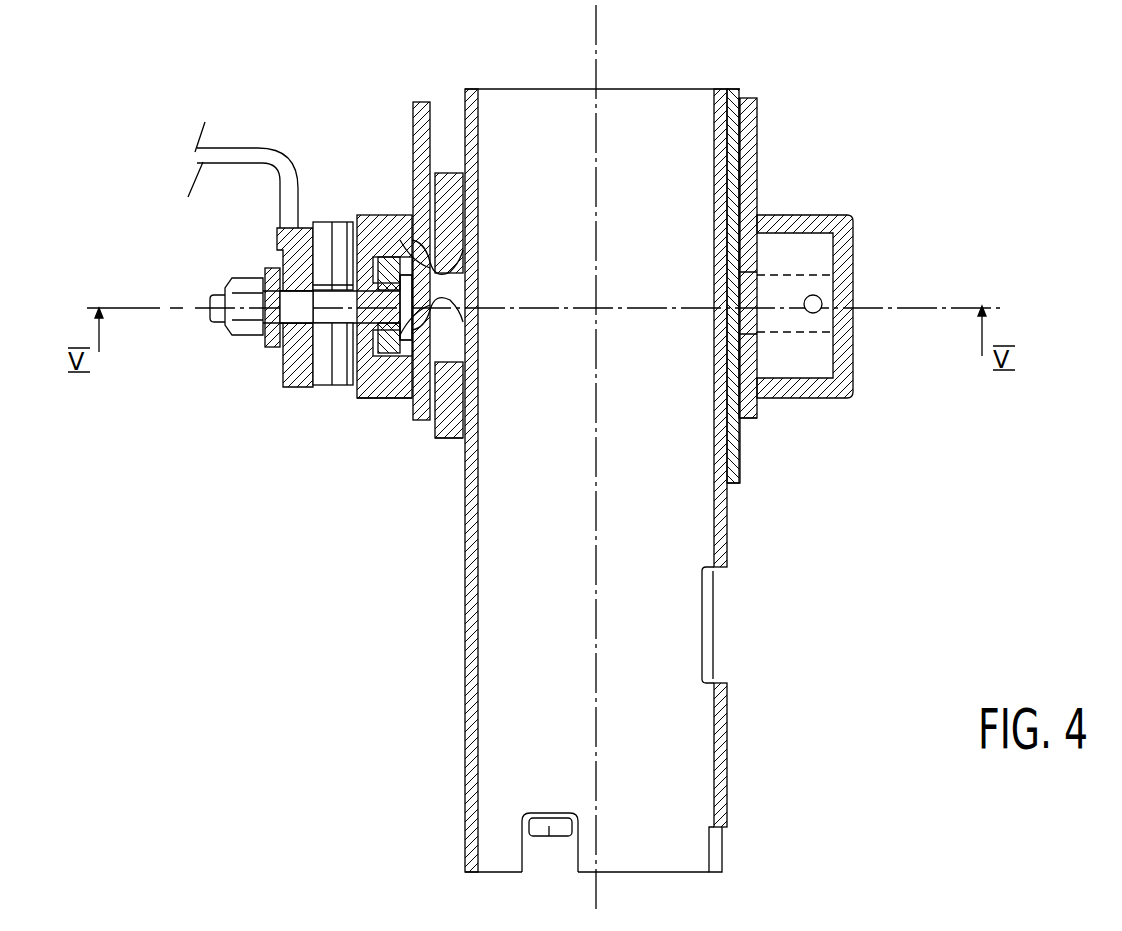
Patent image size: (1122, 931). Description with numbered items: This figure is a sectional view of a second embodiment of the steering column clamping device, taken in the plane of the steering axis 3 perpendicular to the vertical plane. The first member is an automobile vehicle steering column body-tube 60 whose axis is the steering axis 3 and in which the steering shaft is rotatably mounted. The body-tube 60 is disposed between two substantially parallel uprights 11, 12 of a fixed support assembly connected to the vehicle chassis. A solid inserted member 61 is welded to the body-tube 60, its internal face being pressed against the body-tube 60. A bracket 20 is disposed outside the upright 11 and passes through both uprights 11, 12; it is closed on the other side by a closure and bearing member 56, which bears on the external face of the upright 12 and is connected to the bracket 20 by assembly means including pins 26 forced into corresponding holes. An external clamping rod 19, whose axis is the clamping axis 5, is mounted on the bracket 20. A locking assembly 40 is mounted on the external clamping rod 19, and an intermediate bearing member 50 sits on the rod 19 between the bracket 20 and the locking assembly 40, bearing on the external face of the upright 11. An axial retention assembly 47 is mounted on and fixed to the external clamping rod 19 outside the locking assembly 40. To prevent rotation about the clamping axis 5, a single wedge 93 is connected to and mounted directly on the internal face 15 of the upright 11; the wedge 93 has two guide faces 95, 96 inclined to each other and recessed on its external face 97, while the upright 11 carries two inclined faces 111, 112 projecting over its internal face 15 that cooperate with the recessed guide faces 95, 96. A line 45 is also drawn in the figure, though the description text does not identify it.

The steering axis 3 is at (596, 52).
The clamping axis 5 is at (181, 300).
The upright 11 is at (420, 400).
The upright 12 is at (750, 405).
The internal face 15 is at (430, 115).
The external clamping rod 19 is at (288, 318).
The bracket 20 is at (367, 370).
The pin 26 is at (815, 306).
The locking assembly 40 is at (340, 196).
The hydraulic line 45 is at (232, 152).
The axial retention assembly 47 is at (222, 350).
The intermediate bearing member 50 is at (360, 367).
The closure and bearing member 56 is at (845, 255).
The body-tube 60 is at (668, 89).
The solid inserted member 61 is at (738, 218).
The wedge 93 is at (447, 432).
The guide face 95 is at (465, 390).
The guide face 96 is at (450, 232).
The external face 97 is at (435, 193).
The inclined face 111 is at (392, 375).
The inclined face 112 is at (402, 255).